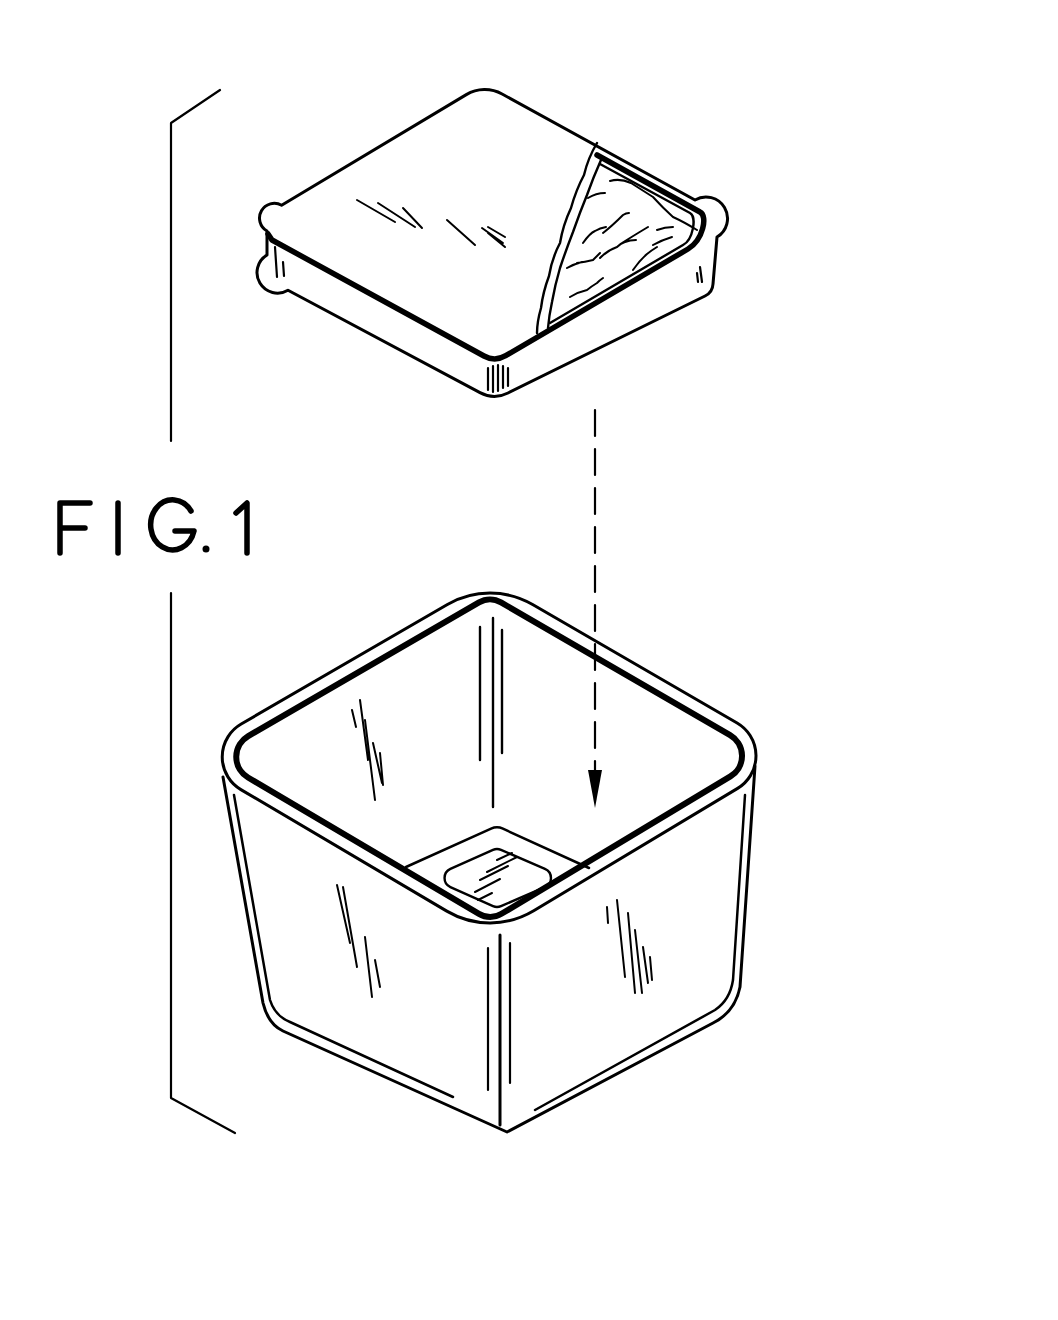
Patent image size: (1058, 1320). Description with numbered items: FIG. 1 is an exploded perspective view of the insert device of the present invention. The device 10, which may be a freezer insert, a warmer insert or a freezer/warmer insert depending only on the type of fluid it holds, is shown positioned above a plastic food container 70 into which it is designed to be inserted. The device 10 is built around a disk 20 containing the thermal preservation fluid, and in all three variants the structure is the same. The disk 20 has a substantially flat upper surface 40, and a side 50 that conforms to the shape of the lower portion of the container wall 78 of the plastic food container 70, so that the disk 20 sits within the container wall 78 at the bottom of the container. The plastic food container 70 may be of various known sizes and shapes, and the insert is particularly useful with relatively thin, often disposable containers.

The device 10 is at (375, 118).
The disk 20 is at (672, 290).
The upper surface 40 is at (528, 152).
The side 50 is at (610, 328).
The plastic food container 70 is at (700, 903).
The container wall 78 is at (753, 843).